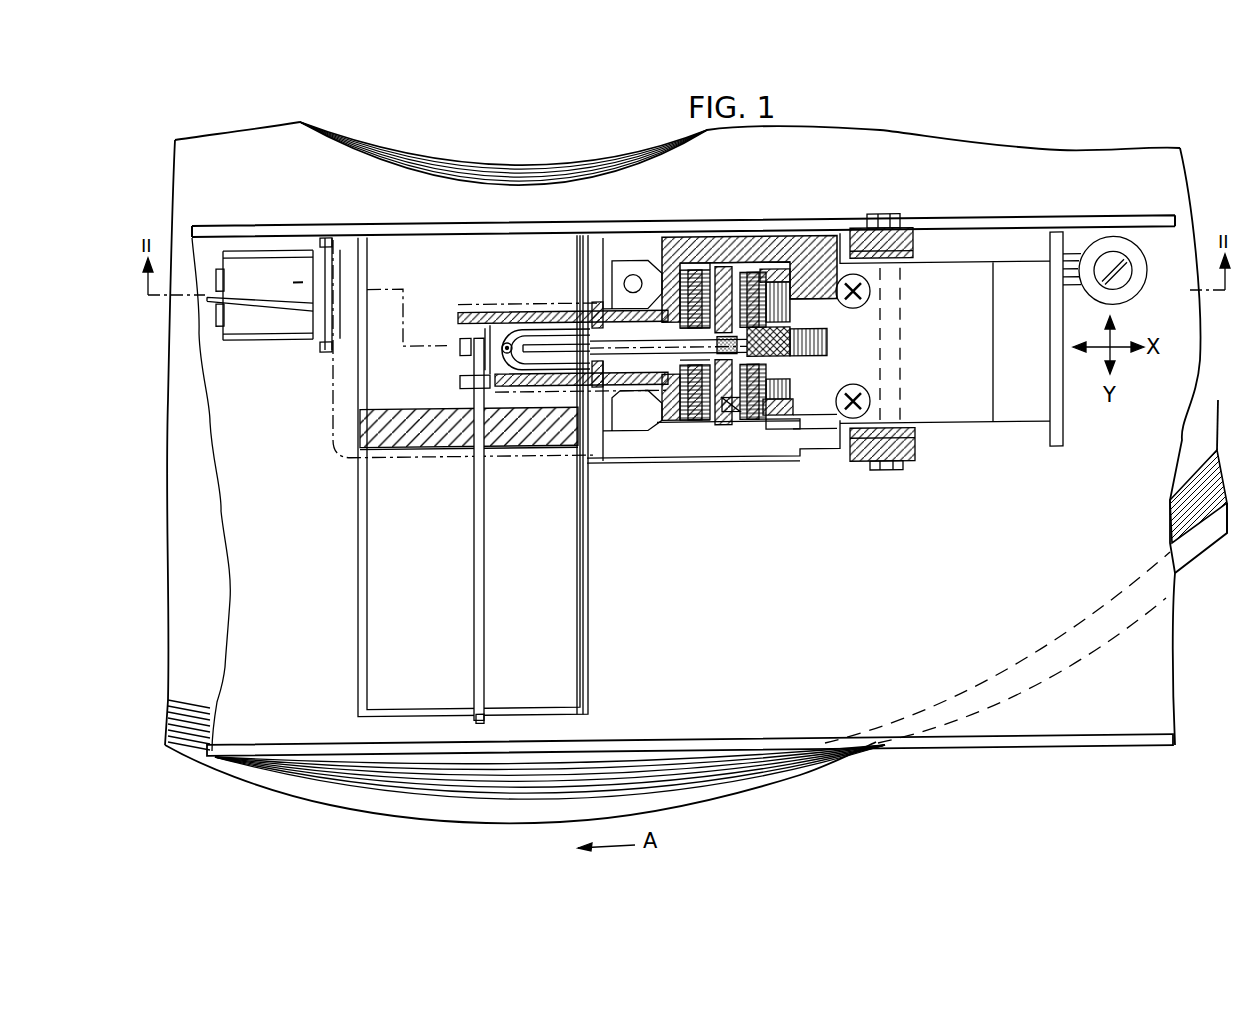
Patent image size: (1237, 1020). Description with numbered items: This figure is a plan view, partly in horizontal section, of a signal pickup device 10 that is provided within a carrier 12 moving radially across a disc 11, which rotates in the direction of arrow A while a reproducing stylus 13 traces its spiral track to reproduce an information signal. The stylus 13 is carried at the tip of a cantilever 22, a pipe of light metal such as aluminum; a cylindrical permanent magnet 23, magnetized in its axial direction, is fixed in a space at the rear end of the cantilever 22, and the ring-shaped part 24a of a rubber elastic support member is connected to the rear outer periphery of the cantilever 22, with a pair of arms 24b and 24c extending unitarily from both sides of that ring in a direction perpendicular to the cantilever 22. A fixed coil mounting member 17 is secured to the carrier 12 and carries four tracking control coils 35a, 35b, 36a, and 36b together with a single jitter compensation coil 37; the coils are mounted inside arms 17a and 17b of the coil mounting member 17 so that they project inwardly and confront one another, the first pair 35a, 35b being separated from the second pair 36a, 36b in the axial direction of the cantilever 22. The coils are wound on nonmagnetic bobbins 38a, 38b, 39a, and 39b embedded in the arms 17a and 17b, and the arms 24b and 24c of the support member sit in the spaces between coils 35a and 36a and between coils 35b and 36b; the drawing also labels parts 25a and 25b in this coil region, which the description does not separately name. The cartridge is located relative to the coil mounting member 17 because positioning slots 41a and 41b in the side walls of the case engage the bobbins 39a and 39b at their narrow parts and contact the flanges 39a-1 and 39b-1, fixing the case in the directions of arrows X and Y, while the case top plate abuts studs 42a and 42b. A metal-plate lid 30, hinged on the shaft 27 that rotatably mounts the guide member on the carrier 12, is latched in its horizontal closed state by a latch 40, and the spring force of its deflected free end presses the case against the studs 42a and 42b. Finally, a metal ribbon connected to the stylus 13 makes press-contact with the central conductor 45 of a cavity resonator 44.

The signal pickup device 10 is at (909, 120).
The disc 11 is at (735, 793).
The carrier 12 is at (1112, 757).
The reproducing stylus 13 is at (516, 343).
The coil mounting member 17 is at (972, 424).
The arm of coil mounting member 17a is at (670, 422).
The arm of coil mounting member 17b is at (723, 300).
The cantilever 22 is at (573, 332).
The permanent magnet 23 is at (634, 274).
The ring-shaped part 24a is at (745, 415).
The arm of elastic support member 24b is at (718, 425).
The arm of elastic support member 24c is at (738, 285).
The lower coil 25a is at (750, 420).
The upper coil 25b is at (748, 290).
The shaft 27 is at (903, 470).
The lid 30 is at (333, 417).
The tracking control coil 35a is at (700, 420).
The tracking control coil 35b is at (690, 302).
The tracking control coil 36a is at (790, 418).
The tracking control coil 36b is at (800, 325).
The jitter compensation coil 37 is at (827, 348).
The bobbin 38a is at (690, 412).
The bobbin 38b is at (697, 270).
The bobbin 39a is at (790, 386).
The flange of narrow part 39a-1 is at (778, 418).
The bobbin 39b is at (786, 303).
The flange of narrow part 39b-1 is at (772, 270).
The latch 40 is at (327, 292).
The positioning slot 41a is at (782, 430).
The positioning slot 41b is at (805, 262).
The stud 42a is at (635, 416).
The stud 42b is at (655, 302).
The cavity resonator 44 is at (358, 595).
The central conductor 45 is at (474, 540).